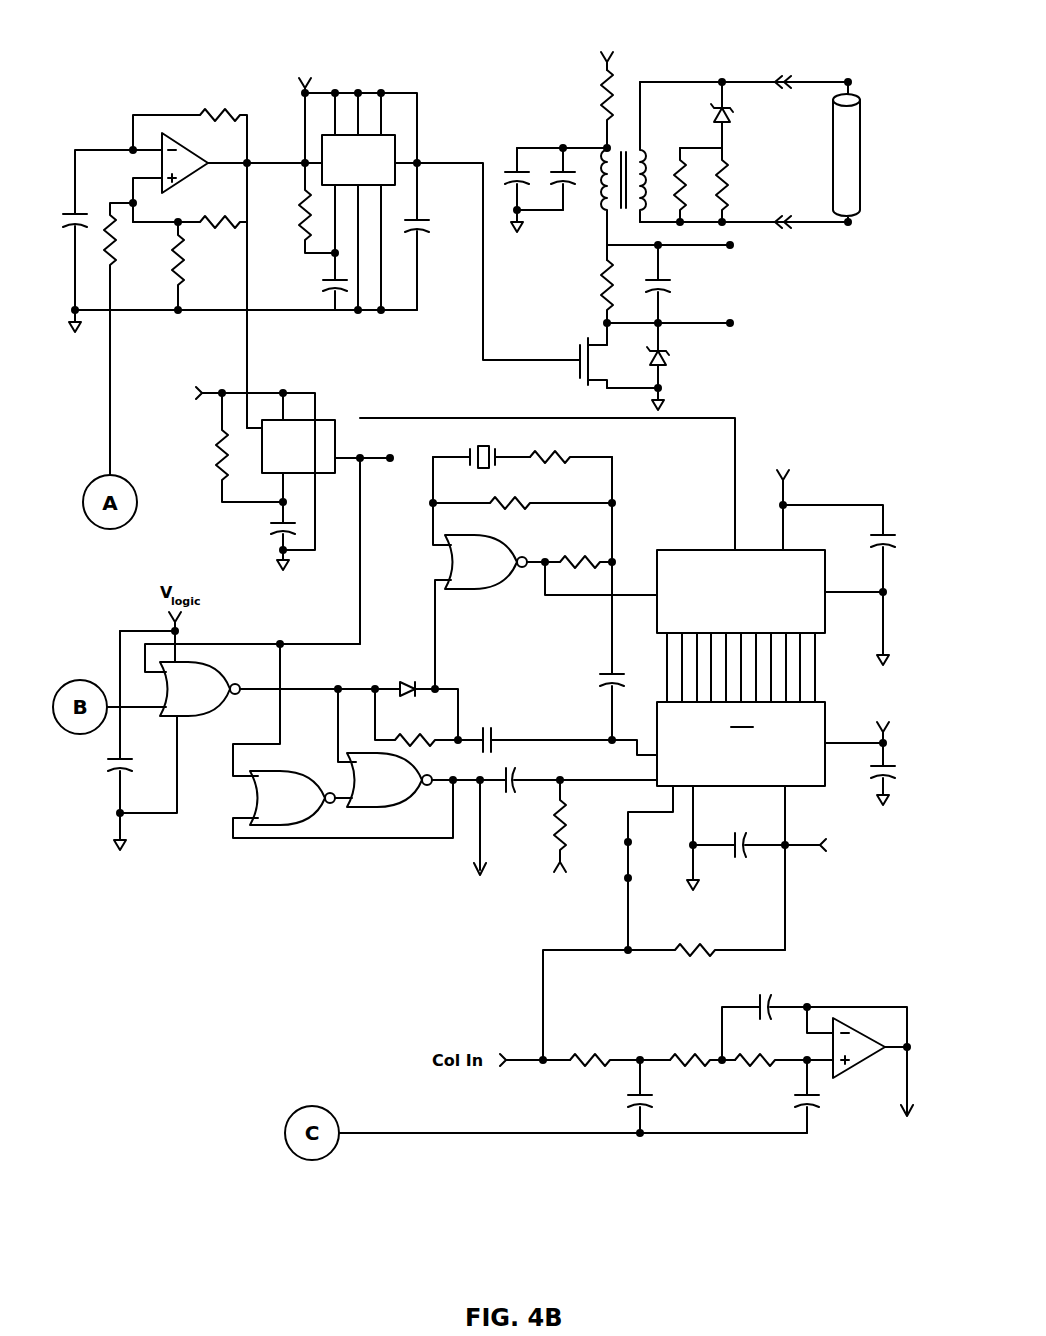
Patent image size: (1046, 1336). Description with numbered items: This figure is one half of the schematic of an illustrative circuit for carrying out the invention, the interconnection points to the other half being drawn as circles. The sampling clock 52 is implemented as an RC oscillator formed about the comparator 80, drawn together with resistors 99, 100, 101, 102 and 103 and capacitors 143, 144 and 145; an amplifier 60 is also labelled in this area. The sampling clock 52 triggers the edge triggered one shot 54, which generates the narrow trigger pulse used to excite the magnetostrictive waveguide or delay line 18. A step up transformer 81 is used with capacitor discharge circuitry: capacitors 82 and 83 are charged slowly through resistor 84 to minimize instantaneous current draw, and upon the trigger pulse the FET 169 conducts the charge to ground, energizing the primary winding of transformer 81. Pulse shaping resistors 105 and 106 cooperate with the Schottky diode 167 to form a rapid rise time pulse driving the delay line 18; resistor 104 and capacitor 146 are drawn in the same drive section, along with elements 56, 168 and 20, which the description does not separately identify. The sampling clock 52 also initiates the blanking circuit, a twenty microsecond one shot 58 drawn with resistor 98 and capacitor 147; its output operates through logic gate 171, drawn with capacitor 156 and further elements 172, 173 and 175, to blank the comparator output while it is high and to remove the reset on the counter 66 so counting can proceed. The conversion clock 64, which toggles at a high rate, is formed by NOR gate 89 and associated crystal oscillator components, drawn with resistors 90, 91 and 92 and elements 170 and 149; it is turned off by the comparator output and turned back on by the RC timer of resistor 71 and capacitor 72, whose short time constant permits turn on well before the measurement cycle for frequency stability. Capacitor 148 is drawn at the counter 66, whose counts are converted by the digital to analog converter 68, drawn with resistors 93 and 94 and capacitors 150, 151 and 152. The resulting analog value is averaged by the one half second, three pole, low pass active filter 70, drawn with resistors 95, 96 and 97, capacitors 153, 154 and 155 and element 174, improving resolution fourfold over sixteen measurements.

The magnetostrictive delay line 18 is at (862, 150).
The cable 20 is at (805, 80).
The sampling clock 52 is at (187, 62).
The edge triggered one shot 54 is at (416, 62).
The high voltage drive circuit 56 is at (650, 62).
The blanking oneshot 58 is at (352, 384).
The high gain amplifier 60 is at (205, 161).
The conversion clock 64 is at (643, 478).
The counter 66 is at (779, 599).
The digital to analog converter 68 is at (754, 825).
The low pass active filter 70 is at (869, 976).
The resistor 71 is at (410, 736).
The capacitor 72 is at (486, 727).
The comparator 80 is at (188, 180).
The step up transformer 81 is at (623, 171).
The capacitor 82 is at (511, 170).
The capacitor 83 is at (570, 196).
The resistor 84 is at (603, 106).
The NOR gate 89 is at (470, 586).
The resistor 90 is at (570, 458).
The resistor 91 is at (526, 504).
The resistor 92 is at (574, 562).
The resistor 93 is at (566, 830).
The resistor 94 is at (706, 950).
The resistor 95 is at (590, 1058).
The resistor 96 is at (688, 1058).
The resistor 97 is at (754, 1068).
The resistor 98 is at (216, 464).
The resistor 99 is at (116, 238).
The resistor 100 is at (172, 266).
The resistor 101 is at (215, 230).
The resistor 102 is at (210, 110).
The resistor 103 is at (300, 212).
The resistor 104 is at (600, 290).
The resistor 105 is at (672, 172).
The resistor 106 is at (732, 188).
The capacitor 143 is at (82, 210).
The capacitor 144 is at (323, 285).
The capacitor 145 is at (422, 218).
The capacitor 146 is at (668, 286).
The capacitor 147 is at (271, 528).
The capacitor 148 is at (872, 540).
The capacitor 149 is at (605, 680).
The capacitor 150 is at (878, 786).
The capacitor 151 is at (512, 792).
The capacitor 152 is at (744, 836).
The capacitor 153 is at (772, 1002).
The capacitor 154 is at (797, 1100).
The capacitor 155 is at (628, 1098).
The capacitor 156 is at (112, 786).
The Schottky diode 167 is at (734, 118).
The zener diode 168 is at (670, 362).
The FET 169 is at (578, 360).
The crystal 170 is at (490, 468).
The logic gate 171 is at (216, 682).
The NOR gate 172 is at (302, 772).
The NOR gate 173 is at (398, 798).
The operational amplifier 174 is at (858, 1062).
The diode 175 is at (405, 681).